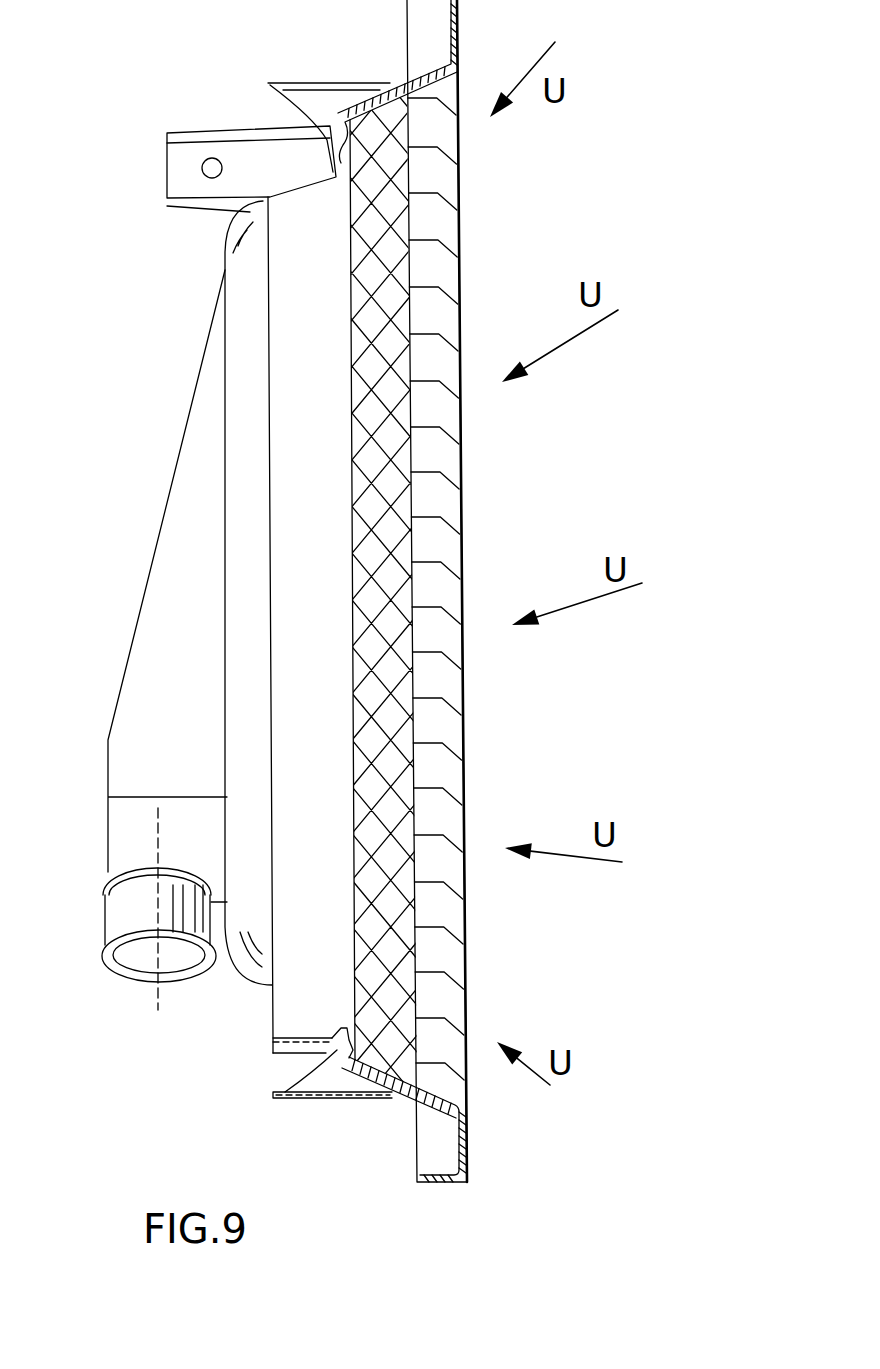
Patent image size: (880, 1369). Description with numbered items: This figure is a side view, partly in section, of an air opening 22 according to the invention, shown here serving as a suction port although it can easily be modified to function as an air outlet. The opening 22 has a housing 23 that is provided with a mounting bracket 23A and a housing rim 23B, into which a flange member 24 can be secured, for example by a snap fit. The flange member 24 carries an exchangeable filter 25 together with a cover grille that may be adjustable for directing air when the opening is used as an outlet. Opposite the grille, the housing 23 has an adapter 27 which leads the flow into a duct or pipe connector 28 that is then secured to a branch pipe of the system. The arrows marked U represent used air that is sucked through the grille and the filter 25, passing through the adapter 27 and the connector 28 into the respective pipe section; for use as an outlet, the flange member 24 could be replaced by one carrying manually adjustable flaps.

The air opening 22 is at (82, 532).
The housing 23 is at (277, 212).
The mounting bracket 23A is at (178, 172).
The housing rim 23B is at (317, 87).
The flange member 24 is at (433, 1185).
The exchangeable filter 25 is at (395, 1060).
The adapter 27 is at (130, 698).
The pipe connector 28 is at (123, 913).